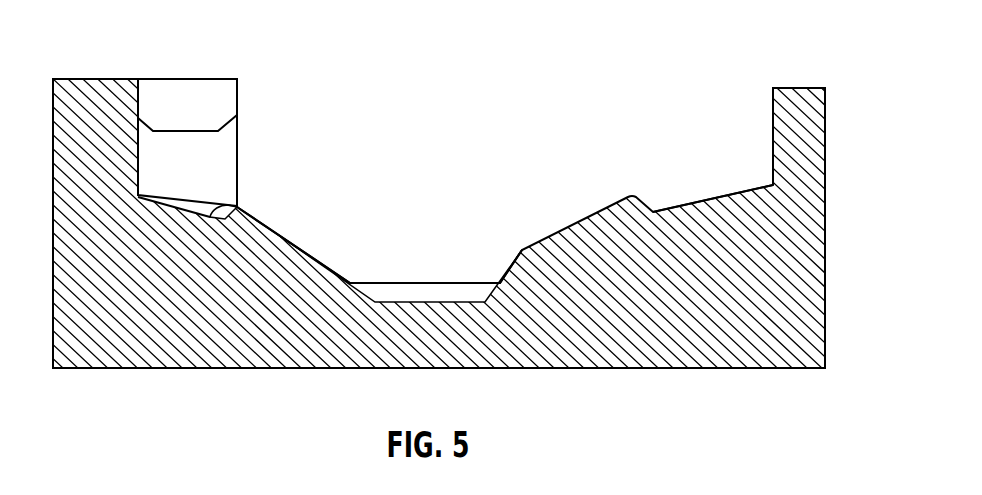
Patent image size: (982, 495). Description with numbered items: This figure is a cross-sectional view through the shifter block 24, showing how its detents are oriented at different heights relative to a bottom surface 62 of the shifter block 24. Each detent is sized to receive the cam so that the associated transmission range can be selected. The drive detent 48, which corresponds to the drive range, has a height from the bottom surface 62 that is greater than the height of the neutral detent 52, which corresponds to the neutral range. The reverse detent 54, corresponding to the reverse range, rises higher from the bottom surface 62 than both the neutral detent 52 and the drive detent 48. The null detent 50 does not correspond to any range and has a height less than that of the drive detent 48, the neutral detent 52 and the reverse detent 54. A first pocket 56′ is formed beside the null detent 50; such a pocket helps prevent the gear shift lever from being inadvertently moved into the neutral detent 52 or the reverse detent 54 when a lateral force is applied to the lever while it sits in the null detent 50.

The shifter block 24 is at (620, 36).
The drive detent 48 is at (710, 198).
The null detent 50 is at (488, 247).
The neutral detent 52 is at (213, 212).
The reverse detent 54 is at (180, 130).
The first pocket 56′ is at (390, 283).
The bottom surface 62 is at (790, 370).